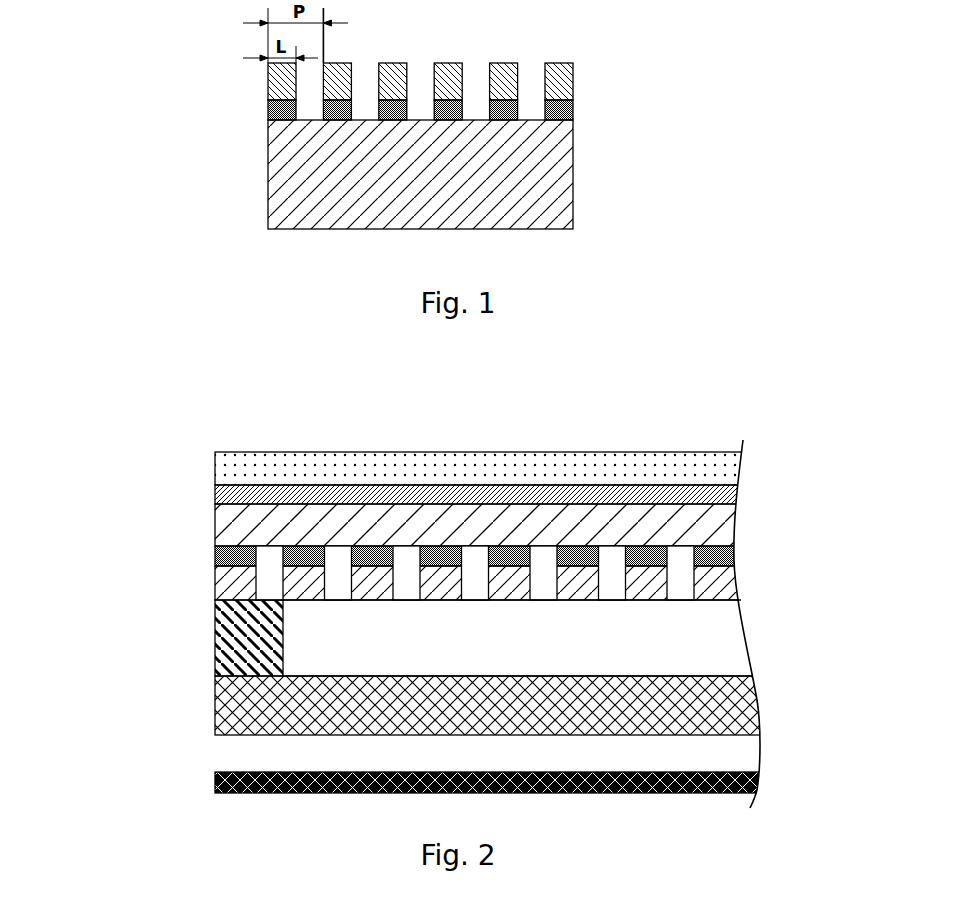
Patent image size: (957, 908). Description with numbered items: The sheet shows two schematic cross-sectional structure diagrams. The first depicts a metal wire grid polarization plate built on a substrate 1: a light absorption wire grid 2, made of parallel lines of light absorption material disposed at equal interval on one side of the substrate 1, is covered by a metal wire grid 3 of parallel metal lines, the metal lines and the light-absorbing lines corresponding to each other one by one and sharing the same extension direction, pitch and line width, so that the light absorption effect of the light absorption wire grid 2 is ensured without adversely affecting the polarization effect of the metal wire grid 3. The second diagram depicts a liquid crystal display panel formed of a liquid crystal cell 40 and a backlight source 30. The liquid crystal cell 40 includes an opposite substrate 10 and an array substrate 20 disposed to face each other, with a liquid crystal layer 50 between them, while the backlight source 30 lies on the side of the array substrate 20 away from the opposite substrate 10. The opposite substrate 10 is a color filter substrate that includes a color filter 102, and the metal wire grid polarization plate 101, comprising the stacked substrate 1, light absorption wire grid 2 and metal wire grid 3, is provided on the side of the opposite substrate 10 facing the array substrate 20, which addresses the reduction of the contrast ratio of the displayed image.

In FIG. 1, the substrate 1 is at (573, 195).
In FIG. 2, the substrate 1 is at (240, 522).
In FIG. 1, the light absorption wire grid 2 is at (575, 110).
In FIG. 2, the light absorption wire grid 2 is at (215, 556).
In FIG. 1, the metal wire grid 3 is at (575, 83).
In FIG. 2, the metal wire grid 3 is at (230, 590).
In FIG. 2, the opposite substrate 10 is at (243, 465).
In FIG. 2, the metal wire grid polarization plate 101 is at (410, 538).
In FIG. 2, the color filter 102 is at (215, 485).
In FIG. 2, the array substrate 20 is at (242, 710).
In FIG. 2, the backlight source 30 is at (217, 773).
In FIG. 2, the liquid crystal cell 40 is at (247, 657).
In FIG. 2, the liquid crystal layer 50 is at (723, 638).